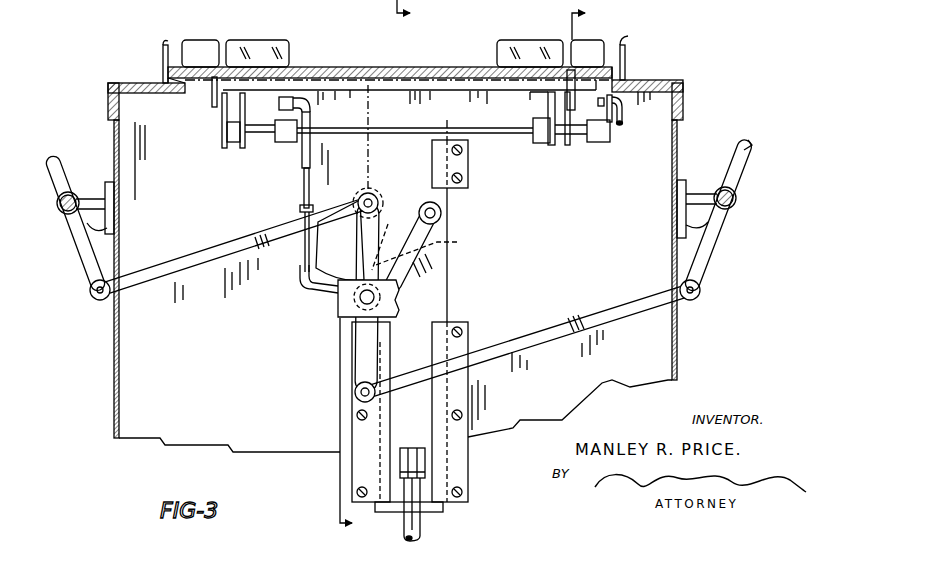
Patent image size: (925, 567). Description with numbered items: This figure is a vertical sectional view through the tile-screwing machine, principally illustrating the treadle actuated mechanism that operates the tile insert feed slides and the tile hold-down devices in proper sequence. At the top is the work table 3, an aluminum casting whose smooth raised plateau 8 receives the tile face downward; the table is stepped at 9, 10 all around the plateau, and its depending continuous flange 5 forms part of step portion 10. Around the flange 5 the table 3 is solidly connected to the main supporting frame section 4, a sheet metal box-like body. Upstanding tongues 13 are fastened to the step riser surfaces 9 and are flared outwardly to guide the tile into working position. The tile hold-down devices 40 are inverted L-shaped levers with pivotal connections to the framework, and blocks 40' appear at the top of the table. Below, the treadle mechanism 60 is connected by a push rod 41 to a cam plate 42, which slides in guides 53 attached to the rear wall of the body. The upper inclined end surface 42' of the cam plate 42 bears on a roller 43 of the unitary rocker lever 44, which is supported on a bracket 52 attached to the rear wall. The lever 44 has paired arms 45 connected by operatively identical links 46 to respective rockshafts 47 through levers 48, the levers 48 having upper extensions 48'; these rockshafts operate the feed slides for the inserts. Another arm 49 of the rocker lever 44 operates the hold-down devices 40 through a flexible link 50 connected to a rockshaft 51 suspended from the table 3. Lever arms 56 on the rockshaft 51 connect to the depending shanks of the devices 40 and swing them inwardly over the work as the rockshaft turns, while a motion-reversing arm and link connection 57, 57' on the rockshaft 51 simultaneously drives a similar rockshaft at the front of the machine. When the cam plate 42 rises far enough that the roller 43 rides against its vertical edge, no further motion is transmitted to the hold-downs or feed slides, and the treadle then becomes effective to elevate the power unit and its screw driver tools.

The work table 3 is at (438, 66).
The main supporting frame section 4 is at (112, 380).
The depending continuous flange 5 is at (106, 104).
The plateau 8 is at (340, 66).
The step riser surface 9 is at (628, 78).
The step portion 10 is at (128, 83).
The upstanding tongue 13 is at (160, 44).
The tile hold-down device 40 is at (405, 61).
The pad block 40' is at (393, 53).
The push rod 41 is at (419, 524).
The cam plate 42 is at (459, 216).
The upper inclined end surface 42' is at (428, 250).
The roller 43 is at (356, 194).
The rocker lever 44 is at (351, 266).
The paired arms 45 is at (360, 230).
The link 46 is at (193, 257).
The rockshaft 47 is at (64, 220).
The lever 48 is at (400, 215).
The arm extension 48' is at (768, 153).
The arm 49 is at (312, 291).
The flexible link 50 is at (300, 171).
The rockshaft 51 is at (378, 130).
The bracket 52 is at (338, 312).
The guide 53 is at (373, 429).
The lever arm 56 is at (222, 113).
The motion-reversing arm 57 is at (624, 115).
The link 57' is at (612, 142).
The treadle mechanism 60 is at (328, 382).